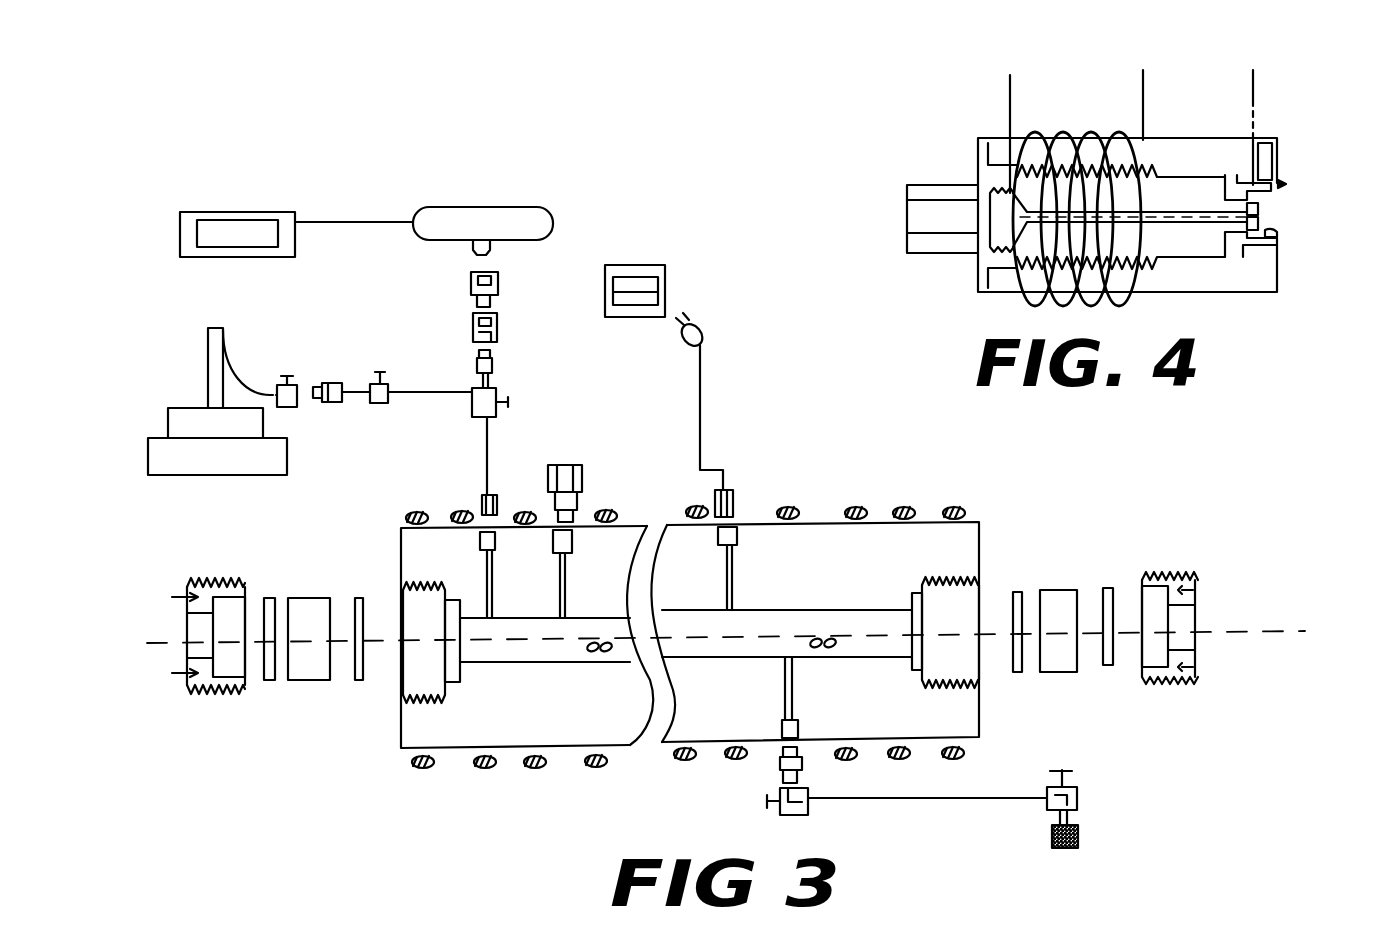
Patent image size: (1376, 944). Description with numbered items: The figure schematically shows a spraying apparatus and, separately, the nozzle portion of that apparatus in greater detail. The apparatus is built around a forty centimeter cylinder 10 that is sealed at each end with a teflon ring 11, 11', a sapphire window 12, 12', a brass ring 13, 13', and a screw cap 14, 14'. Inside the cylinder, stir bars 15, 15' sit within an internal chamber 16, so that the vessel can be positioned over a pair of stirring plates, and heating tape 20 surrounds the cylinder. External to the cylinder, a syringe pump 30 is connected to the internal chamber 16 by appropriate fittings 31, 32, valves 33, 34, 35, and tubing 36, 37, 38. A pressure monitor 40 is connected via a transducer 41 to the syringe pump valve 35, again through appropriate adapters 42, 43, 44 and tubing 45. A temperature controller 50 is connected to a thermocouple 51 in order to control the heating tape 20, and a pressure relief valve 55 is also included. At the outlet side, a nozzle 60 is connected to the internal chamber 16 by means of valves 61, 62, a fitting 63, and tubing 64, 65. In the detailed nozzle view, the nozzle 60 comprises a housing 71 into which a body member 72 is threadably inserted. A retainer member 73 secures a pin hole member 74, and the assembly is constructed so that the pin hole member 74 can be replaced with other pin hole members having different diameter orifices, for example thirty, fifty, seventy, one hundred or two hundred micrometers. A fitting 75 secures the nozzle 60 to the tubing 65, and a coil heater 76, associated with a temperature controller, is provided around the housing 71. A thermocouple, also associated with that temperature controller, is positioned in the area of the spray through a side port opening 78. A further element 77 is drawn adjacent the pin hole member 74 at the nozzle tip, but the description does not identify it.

In FIG. 3, the cylinder 10 is at (410, 735).
In FIG. 3, the teflon ring 11 is at (361, 678).
In FIG. 3, the sapphire window 12 is at (309, 681).
In FIG. 3, the brass ring 13 is at (273, 679).
In FIG. 3, the screw cap 14 is at (208, 668).
In FIG. 3, the stir bar 15 is at (559, 744).
In FIG. 3, the internal chamber 16 is at (743, 635).
In FIG. 3, the heating tape 20 is at (962, 513).
In FIG. 3, the teflon ring 11' is at (1021, 667).
In FIG. 3, the sapphire window 12' is at (1056, 668).
In FIG. 3, the brass ring 13' is at (1111, 670).
In FIG. 3, the screw cap 14' is at (1170, 664).
In FIG. 3, the stir bar 15' is at (870, 770).
In FIG. 3, the syringe pump 30 is at (202, 453).
In FIG. 3, the fitting 31 is at (340, 373).
In FIG. 3, the fitting 32 is at (483, 497).
In FIG. 3, the valve 33 is at (287, 407).
In FIG. 3, the valve 34 is at (380, 367).
In FIG. 3, the syringe pump valve 35 is at (477, 405).
In FIG. 3, the tubing 36 is at (357, 400).
In FIG. 3, the tubing 37 is at (417, 390).
In FIG. 3, the tubing 38 is at (489, 445).
In FIG. 3, the pressure monitor 40 is at (294, 212).
In FIG. 3, the transducer 41 is at (537, 212).
In FIG. 3, the adapter 42 is at (470, 282).
In FIG. 3, the adapter 43 is at (498, 322).
In FIG. 3, the adapter 44 is at (493, 362).
In FIG. 3, the tubing 45 is at (489, 382).
In FIG. 3, the temperature controller 50 is at (662, 285).
In FIG. 3, the thermocouple 51 is at (735, 490).
In FIG. 3, the pressure relief valve 55 is at (582, 490).
In FIG. 3, the nozzle 60 is at (1078, 837).
In FIG. 4, the nozzle 60 is at (1264, 309).
In FIG. 3, the valve 61 is at (1077, 793).
In FIG. 3, the valve 62 is at (800, 810).
In FIG. 3, the fitting 63 is at (780, 768).
In FIG. 3, the tubing 64 is at (957, 798).
In FIG. 3, the tubing 65 is at (1058, 818).
In FIG. 4, the housing 71 is at (1262, 267).
In FIG. 4, the body member 72 is at (1165, 203).
In FIG. 4, the retainer member 73 is at (1277, 235).
In FIG. 4, the pin hole member 74 is at (1260, 222).
In FIG. 4, the fitting 75 is at (912, 183).
In FIG. 4, the coil heater 76 is at (1080, 130).
In FIG. 4, the lead 77 is at (1286, 183).
In FIG. 4, the side port opening 78 is at (1257, 140).